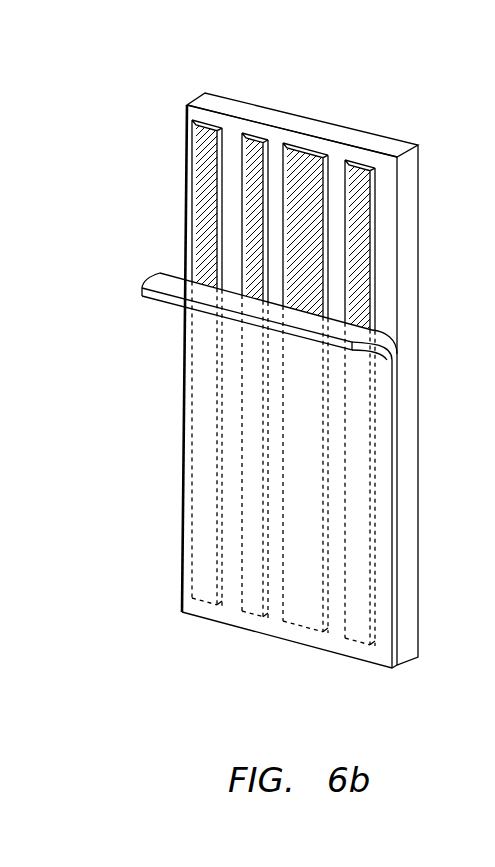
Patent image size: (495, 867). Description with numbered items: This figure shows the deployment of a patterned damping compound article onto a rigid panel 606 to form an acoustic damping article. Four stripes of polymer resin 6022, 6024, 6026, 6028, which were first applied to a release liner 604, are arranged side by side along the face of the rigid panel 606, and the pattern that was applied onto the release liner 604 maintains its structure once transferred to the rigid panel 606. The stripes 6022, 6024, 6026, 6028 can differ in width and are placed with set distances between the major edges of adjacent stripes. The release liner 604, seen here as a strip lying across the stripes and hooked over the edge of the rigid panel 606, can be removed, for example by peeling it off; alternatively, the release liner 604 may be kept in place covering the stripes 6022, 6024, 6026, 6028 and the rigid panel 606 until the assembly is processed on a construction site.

The rigid panel 606 is at (388, 160).
The release liner 604 is at (144, 277).
The stripe of polymer resin 6022 is at (349, 166).
The stripe of polymer resin 6024 is at (285, 148).
The stripe of polymer resin 6026 is at (240, 135).
The stripe of polymer resin 6028 is at (186, 128).